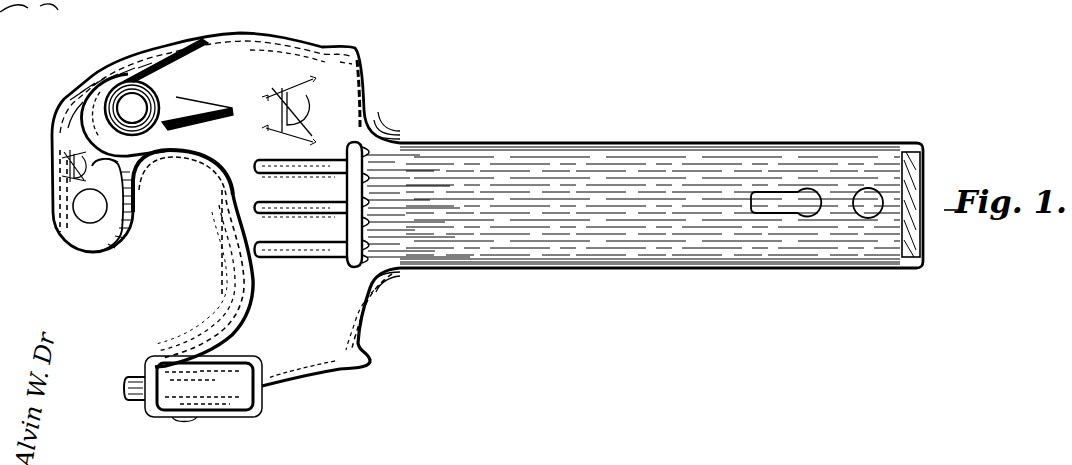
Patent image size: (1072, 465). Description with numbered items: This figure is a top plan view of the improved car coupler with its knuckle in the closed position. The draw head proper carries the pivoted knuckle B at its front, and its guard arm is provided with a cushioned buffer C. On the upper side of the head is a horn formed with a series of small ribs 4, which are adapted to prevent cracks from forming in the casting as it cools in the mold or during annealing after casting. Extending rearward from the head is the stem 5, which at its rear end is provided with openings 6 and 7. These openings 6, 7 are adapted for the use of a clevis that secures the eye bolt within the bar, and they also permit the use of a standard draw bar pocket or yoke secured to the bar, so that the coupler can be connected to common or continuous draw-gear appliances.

The pivoted knuckle B is at (53, 126).
The cushioned buffer C is at (130, 400).
The small ribs 4 is at (372, 229).
The stem 5 is at (627, 247).
The opening 6 is at (798, 199).
The opening 7 is at (863, 204).